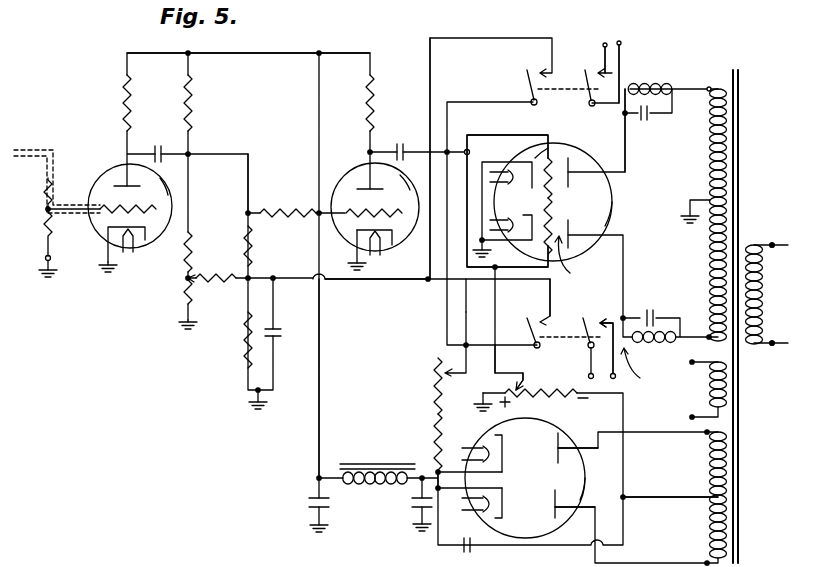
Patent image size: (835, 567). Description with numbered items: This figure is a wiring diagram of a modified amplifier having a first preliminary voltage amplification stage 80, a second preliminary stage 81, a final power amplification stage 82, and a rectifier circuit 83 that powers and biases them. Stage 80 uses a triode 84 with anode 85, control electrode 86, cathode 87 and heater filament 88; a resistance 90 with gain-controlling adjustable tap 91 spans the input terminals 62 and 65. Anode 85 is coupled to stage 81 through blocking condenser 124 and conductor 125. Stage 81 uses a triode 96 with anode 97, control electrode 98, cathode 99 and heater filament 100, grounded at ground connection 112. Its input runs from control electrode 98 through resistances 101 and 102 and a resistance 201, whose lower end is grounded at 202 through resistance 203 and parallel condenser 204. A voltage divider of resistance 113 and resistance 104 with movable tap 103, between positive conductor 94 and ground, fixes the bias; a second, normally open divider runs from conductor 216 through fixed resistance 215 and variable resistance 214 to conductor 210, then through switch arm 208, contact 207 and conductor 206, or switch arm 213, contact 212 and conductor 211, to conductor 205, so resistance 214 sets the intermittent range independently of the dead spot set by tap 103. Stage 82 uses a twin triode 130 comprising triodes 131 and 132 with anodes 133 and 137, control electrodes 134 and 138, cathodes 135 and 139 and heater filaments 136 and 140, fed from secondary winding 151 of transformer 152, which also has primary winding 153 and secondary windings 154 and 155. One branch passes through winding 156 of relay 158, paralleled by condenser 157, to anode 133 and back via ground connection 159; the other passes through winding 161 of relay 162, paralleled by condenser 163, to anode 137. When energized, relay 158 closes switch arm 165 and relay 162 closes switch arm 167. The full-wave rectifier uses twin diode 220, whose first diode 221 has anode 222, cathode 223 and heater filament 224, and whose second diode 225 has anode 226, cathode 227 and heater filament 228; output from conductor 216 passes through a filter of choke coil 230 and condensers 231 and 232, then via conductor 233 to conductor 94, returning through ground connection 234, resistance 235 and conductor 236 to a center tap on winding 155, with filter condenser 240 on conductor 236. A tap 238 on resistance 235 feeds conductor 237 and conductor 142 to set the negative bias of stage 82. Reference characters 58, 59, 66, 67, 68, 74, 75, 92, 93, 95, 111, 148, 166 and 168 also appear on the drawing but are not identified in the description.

The output terminal 58 is at (772, 243).
The output terminal 59 is at (765, 356).
The input terminal 62 is at (21, 146).
The input terminal 65 is at (51, 258).
The ground connection 66 is at (46, 268).
The control terminal 67 is at (605, 43).
The control terminal 68 is at (621, 42).
The terminal 74 is at (588, 376).
The terminal 75 is at (617, 380).
The first preliminary voltage amplification stage 80 is at (104, 143).
The second preliminary voltage amplification stage 81 is at (352, 156).
The final power amplification stage 82 is at (655, 203).
The rectifier circuit 83 is at (658, 480).
The triode 84 is at (172, 187).
The anode 85 is at (118, 175).
The control electrode 86 is at (100, 205).
The cathode 87 is at (106, 240).
The heater filament 88 is at (145, 246).
The resistance 90 is at (46, 190).
The adjustable tap 91 is at (54, 203).
The grid resistor 92 is at (53, 212).
The cathode ground 93 is at (108, 267).
The positive power supply terminal 94 is at (254, 55).
The plate load resistor 95 is at (125, 99).
The triode 96 is at (403, 177).
The anode 97 is at (357, 190).
The control electrode 98 is at (380, 213).
The cathode 99 is at (394, 244).
The heater filament 100 is at (386, 249).
The resistance 101 is at (286, 216).
The resistance 102 is at (218, 278).
The tap 103 is at (192, 276).
The resistance 104 is at (185, 299).
The plate load resistor 111 is at (372, 86).
The ground connection 112 is at (352, 260).
The resistance 113 is at (190, 101).
The blocking condenser 124 is at (159, 146).
The conductor 125 is at (249, 172).
The twin triode 130 is at (613, 214).
The triode 131 is at (563, 154).
The triode 132 is at (575, 259).
The anode 133 is at (576, 163).
The control electrode 134 is at (545, 162).
The cathode 135 is at (520, 165).
The heater filament 136 is at (505, 170).
The anode 137 is at (576, 245).
The control electrode 138 is at (566, 225).
The cathode 139 is at (496, 241).
The heater filament 140 is at (502, 222).
The conductor 142 is at (483, 135).
The coupling capacitor 148 is at (400, 144).
The secondary winding 151 is at (710, 157).
The transformer 152 is at (741, 78).
The primary winding 153 is at (782, 243).
The secondary winding 154 is at (712, 388).
The secondary winding 155 is at (710, 455).
The winding 156 is at (657, 84).
The condenser 157 is at (650, 116).
The relay 158 is at (632, 70).
The ground connection 159 is at (688, 208).
The winding 161 is at (655, 351).
The relay 162 is at (643, 366).
The condenser 163 is at (655, 316).
The switch arm 165 is at (589, 104).
The switch blade 166 is at (594, 68).
The switch arm 167 is at (570, 339).
The switch contact lead 168 is at (610, 320).
The resistance 201 is at (252, 250).
The ground 202 is at (263, 402).
The resistance 203 is at (246, 346).
The parallel condenser 204 is at (279, 337).
The conductor 205 is at (370, 280).
The conductor 206 is at (474, 295).
The contact 207 is at (545, 316).
The switch arm 208 is at (530, 322).
The conductor 210 is at (468, 342).
The conductor 211 is at (431, 80).
The contact 212 is at (527, 77).
The switch arm 213 is at (526, 89).
The variable resistance 214 is at (438, 365).
The fixed resistance 215 is at (437, 426).
The conductor 216 is at (437, 470).
The twin diode 220 is at (583, 475).
The first diode 221 is at (540, 455).
The anode 222 is at (561, 436).
The cathode 223 is at (544, 431).
The heater filament 224 is at (472, 443).
The second diode 225 is at (540, 500).
The anode 226 is at (560, 517).
The cathode 227 is at (505, 517).
The heater filament 228 is at (478, 512).
The choke coil 230 is at (371, 486).
The condenser 231 is at (306, 510).
The condenser 232 is at (414, 509).
The conductor 233 is at (320, 372).
The ground connection 234 is at (482, 400).
The resistance 235 is at (575, 395).
The conductor 236 is at (640, 498).
The conductor 237 is at (496, 358).
The tap 238 is at (537, 376).
The filter condenser 240 is at (472, 548).